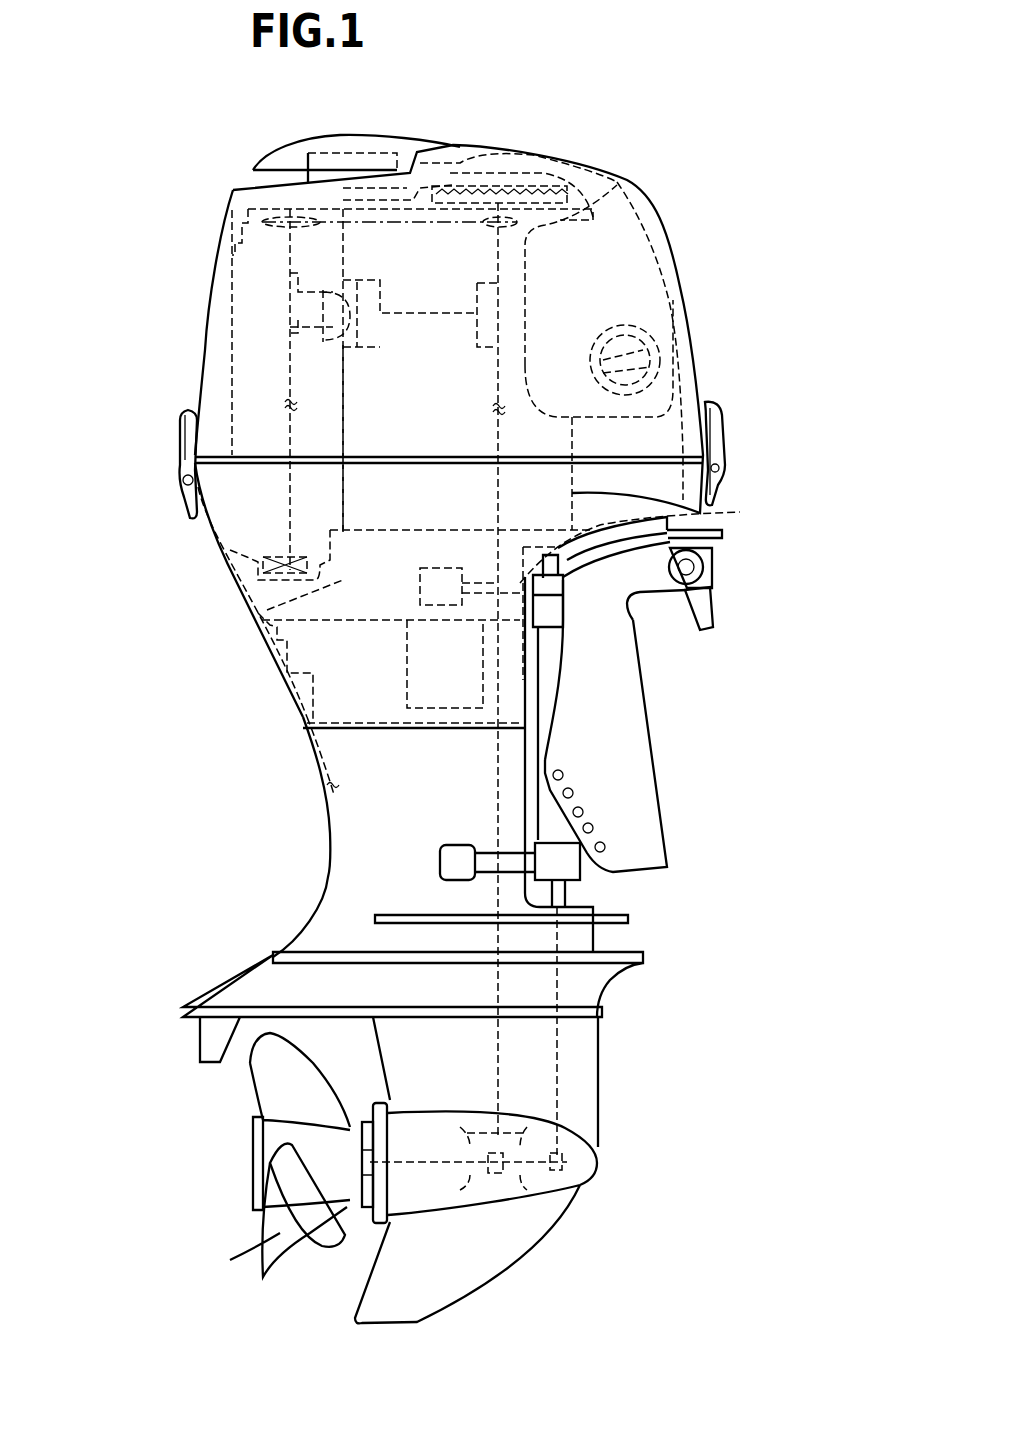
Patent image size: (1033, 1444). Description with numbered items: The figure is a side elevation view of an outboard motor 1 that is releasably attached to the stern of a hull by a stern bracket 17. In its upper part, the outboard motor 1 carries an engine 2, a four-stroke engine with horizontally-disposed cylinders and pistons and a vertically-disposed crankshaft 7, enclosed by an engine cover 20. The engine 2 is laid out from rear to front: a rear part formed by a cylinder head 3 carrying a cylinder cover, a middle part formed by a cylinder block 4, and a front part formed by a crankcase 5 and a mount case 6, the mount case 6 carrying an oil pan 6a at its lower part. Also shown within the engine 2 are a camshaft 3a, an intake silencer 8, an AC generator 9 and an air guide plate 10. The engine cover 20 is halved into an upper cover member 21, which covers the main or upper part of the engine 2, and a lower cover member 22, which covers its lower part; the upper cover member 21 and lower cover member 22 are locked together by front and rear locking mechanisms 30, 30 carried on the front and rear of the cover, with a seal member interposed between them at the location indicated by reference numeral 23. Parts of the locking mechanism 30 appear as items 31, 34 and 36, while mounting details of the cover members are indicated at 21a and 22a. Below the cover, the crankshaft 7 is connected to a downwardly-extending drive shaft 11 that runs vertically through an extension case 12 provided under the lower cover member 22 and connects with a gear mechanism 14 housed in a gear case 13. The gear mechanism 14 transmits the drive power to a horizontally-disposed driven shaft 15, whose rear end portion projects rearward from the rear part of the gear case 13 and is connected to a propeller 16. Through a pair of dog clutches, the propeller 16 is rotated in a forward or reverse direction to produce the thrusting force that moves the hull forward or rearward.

The outboard motor 1 is at (645, 128).
The engine 2 is at (470, 270).
The cylinder head 3 is at (232, 327).
The camshaft 3a is at (290, 273).
The cylinder block 4 is at (404, 343).
The crankcase 5 is at (740, 512).
The mount case 6 is at (358, 584).
The oil pan 6a is at (407, 673).
The crankshaft 7 is at (505, 365).
The intake silencer 8 is at (650, 252).
The AC generator 9 is at (540, 187).
The air guide plate 10 is at (485, 153).
The drive shaft 11 is at (497, 737).
The extension case 12 is at (350, 813).
The gear case 13 is at (618, 1044).
The gear mechanism 14 is at (530, 1141).
The driven shaft 15 is at (437, 1167).
The propeller 16 is at (278, 1238).
The stern bracket 17 is at (625, 730).
The engine cover 20 is at (696, 282).
The upper cover member 21 is at (225, 212).
The top cover mount 21a is at (390, 455).
The lower cover member 22 is at (247, 563).
The mount rubber 22a is at (450, 455).
The seal member interposition location 23 is at (622, 456).
The locking mechanism 30 is at (155, 468).
The latch lever 31 is at (183, 412).
The latch pivot 34 is at (182, 500).
The latch hook 36 is at (180, 447).